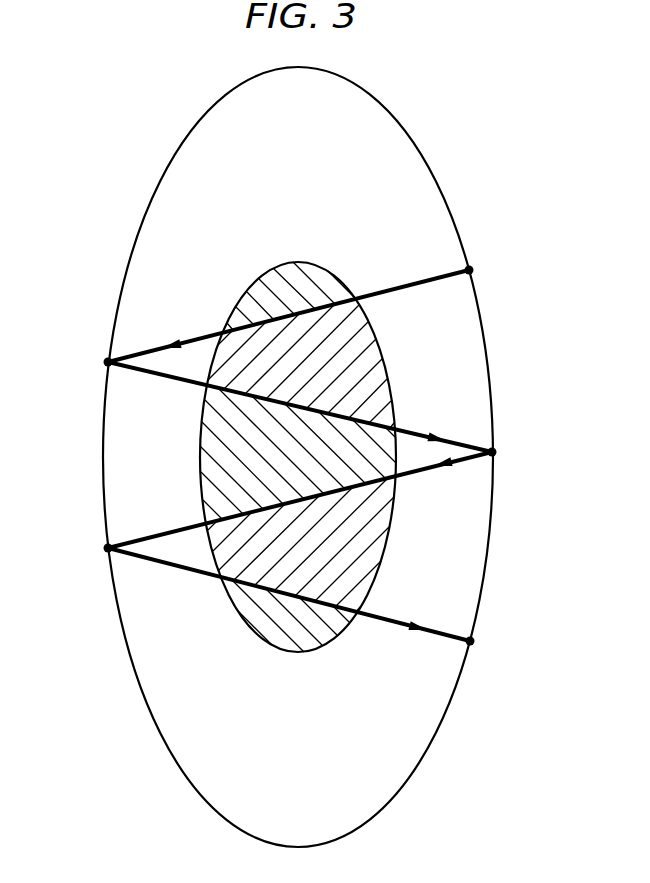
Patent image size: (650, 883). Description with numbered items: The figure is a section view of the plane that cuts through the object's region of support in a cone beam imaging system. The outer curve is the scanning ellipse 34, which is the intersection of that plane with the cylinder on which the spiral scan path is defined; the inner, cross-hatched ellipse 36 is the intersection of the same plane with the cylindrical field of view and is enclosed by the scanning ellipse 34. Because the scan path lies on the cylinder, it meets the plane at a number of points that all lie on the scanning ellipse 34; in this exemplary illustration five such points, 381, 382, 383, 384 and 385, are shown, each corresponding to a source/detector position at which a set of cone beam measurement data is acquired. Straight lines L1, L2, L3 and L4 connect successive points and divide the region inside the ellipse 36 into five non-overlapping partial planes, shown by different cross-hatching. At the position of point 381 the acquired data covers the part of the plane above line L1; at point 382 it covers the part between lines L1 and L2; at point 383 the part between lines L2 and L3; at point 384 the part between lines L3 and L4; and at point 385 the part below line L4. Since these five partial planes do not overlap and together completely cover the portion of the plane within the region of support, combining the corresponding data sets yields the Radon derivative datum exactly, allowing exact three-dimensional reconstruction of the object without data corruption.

The scanning ellipse 34 is at (430, 169).
The ellipse 36 is at (300, 262).
The point of intersection 381 is at (469, 270).
The point of intersection 382 is at (108, 362).
The point of intersection 383 is at (492, 452).
The point of intersection 384 is at (108, 548).
The point of intersection 385 is at (470, 641).
The line L1 is at (180, 335).
The line L2 is at (188, 388).
The line L3 is at (153, 532).
The line L4 is at (181, 572).